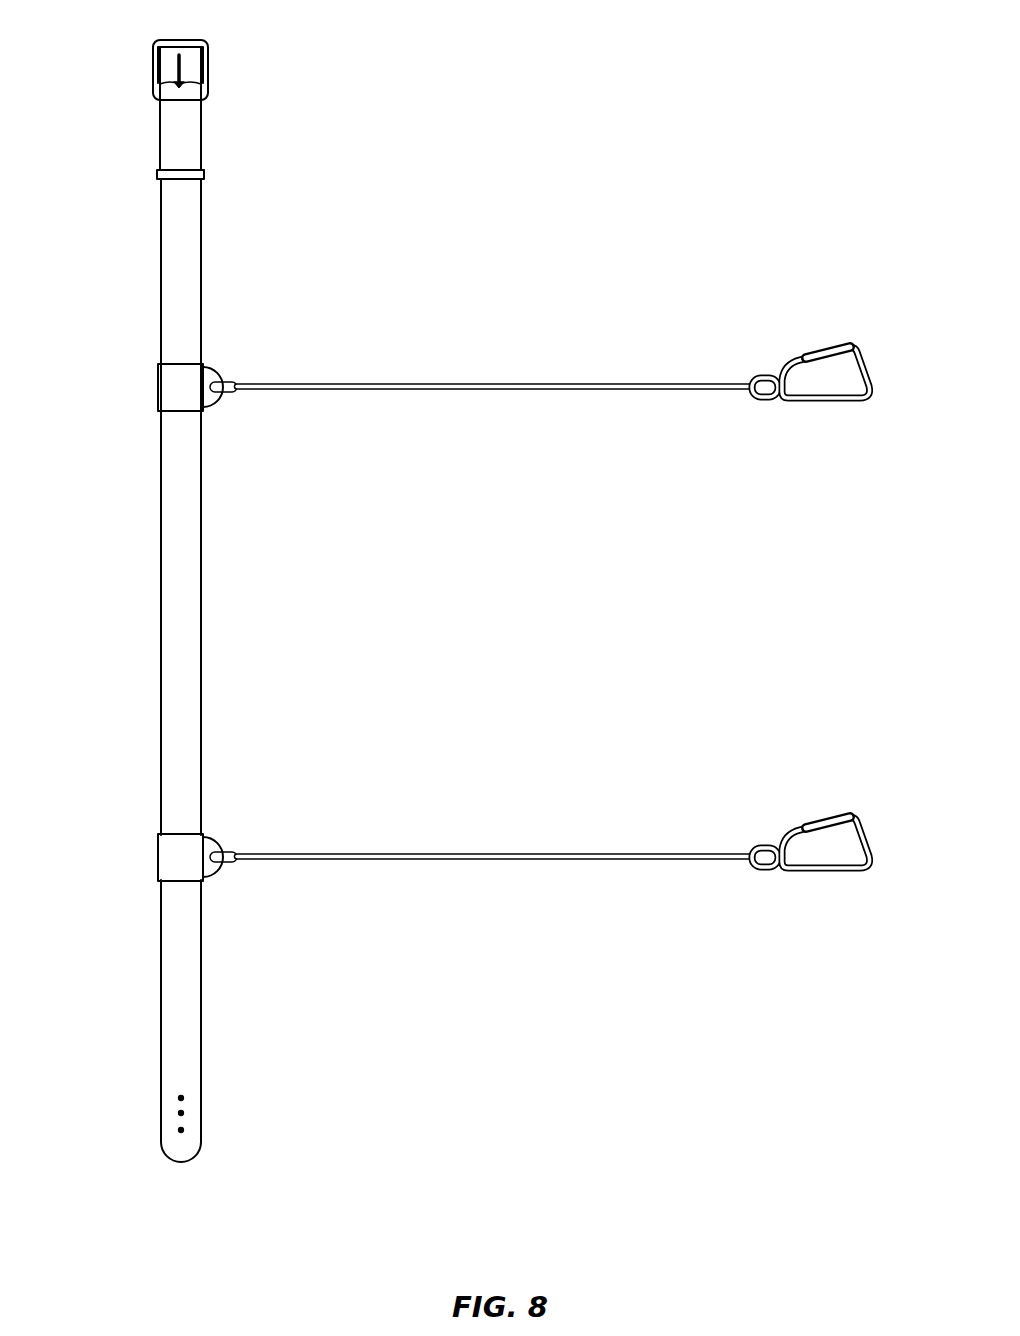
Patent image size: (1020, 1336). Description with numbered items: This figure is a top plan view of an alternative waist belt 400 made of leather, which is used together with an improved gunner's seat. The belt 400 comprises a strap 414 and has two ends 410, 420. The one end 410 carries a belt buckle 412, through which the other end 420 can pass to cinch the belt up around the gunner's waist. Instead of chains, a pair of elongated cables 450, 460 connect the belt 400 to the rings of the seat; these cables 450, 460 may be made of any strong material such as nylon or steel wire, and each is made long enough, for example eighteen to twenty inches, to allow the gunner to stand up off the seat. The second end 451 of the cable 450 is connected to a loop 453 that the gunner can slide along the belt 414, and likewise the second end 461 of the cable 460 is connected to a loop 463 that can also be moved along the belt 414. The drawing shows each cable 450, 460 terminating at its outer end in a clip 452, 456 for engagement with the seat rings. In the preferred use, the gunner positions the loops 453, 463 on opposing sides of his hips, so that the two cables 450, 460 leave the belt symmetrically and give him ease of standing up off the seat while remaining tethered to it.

The waist belt 400 is at (520, 152).
The end 410 is at (190, 130).
The belt buckle 412 is at (184, 40).
The strap 414 is at (190, 583).
The end 420 is at (190, 1112).
The cable 450 is at (486, 384).
The second end 451 is at (226, 377).
The first carabiner clip 452 is at (855, 345).
The loop 453 is at (168, 392).
The second carabiner clip 456 is at (855, 815).
The cable 460 is at (486, 854).
The second end 461 is at (208, 840).
The loop 463 is at (168, 862).